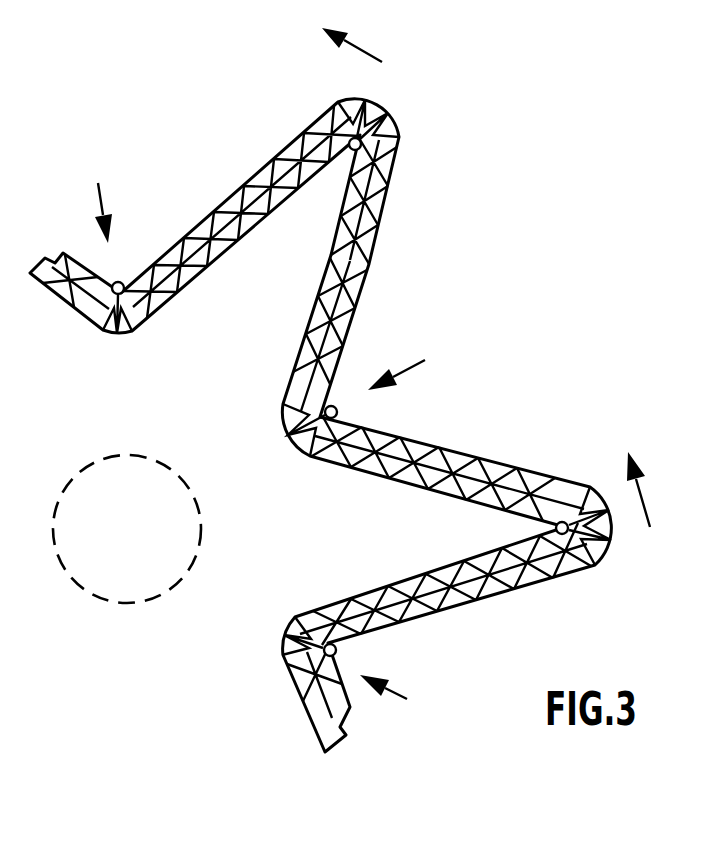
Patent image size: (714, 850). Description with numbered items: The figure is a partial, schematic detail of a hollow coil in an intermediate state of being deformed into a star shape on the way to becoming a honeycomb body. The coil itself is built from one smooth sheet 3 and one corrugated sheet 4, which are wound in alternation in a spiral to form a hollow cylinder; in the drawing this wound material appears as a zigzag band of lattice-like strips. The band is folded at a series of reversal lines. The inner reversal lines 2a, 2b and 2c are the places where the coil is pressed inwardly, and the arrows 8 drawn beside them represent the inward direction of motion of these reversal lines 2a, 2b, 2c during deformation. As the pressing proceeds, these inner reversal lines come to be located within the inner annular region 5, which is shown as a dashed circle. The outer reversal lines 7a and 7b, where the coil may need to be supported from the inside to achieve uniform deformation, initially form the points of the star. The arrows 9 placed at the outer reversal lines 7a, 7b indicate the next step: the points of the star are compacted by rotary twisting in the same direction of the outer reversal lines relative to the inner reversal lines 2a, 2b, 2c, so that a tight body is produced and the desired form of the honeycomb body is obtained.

The reversal line 2a is at (119, 281).
The reversal line 2b is at (336, 406).
The reversal line 2c is at (337, 652).
The smooth sheet 3 is at (452, 445).
The corrugated sheet 4 is at (541, 476).
The inner annular region 5 is at (141, 604).
The reversal line 7a is at (351, 149).
The reversal line 7b is at (556, 528).
The arrows 8 is at (101, 200).
The arrows 9 is at (360, 49).